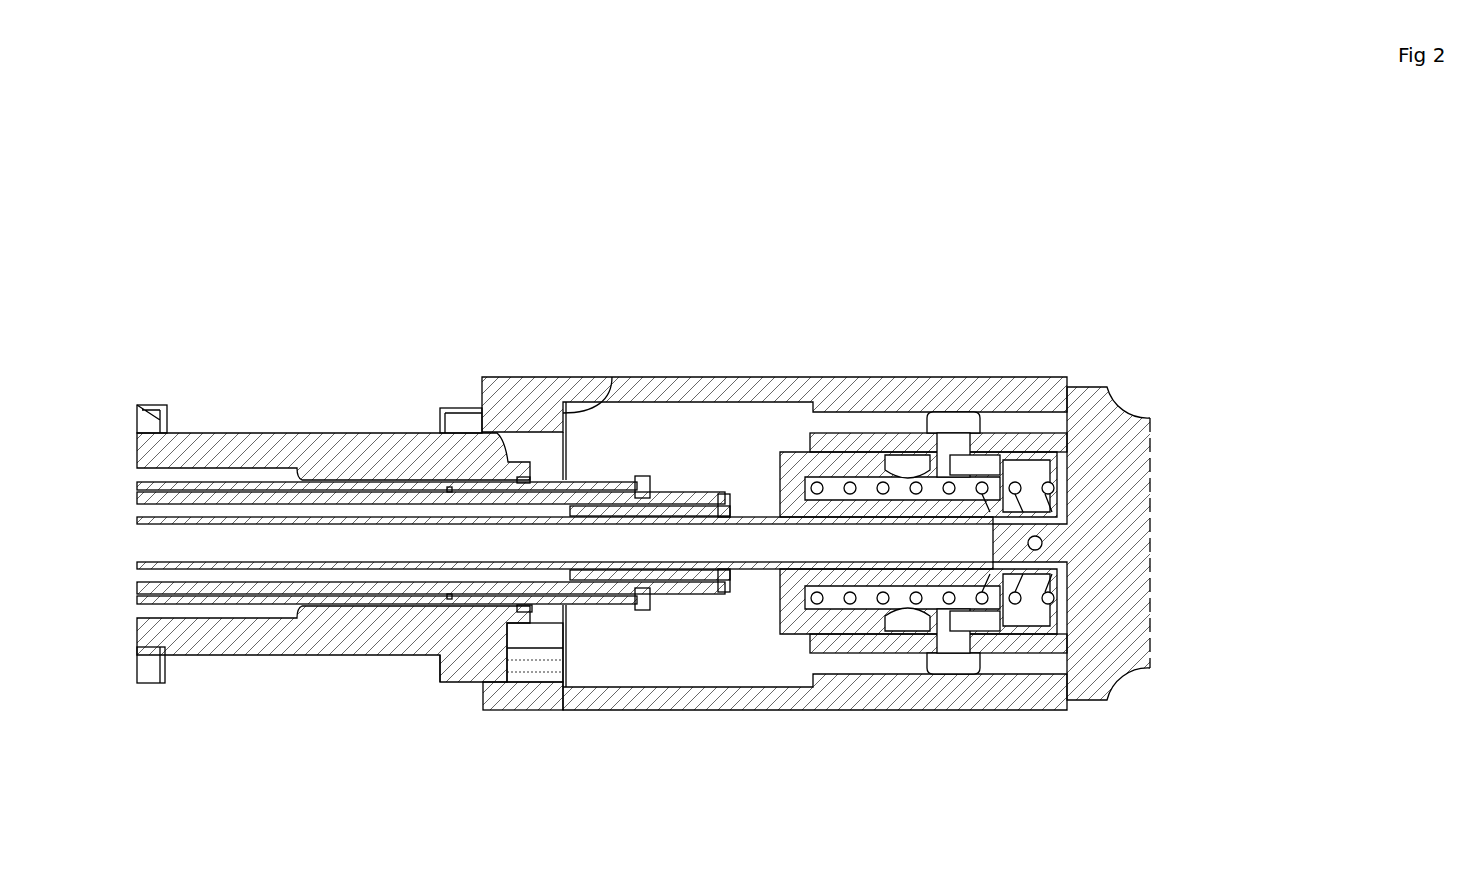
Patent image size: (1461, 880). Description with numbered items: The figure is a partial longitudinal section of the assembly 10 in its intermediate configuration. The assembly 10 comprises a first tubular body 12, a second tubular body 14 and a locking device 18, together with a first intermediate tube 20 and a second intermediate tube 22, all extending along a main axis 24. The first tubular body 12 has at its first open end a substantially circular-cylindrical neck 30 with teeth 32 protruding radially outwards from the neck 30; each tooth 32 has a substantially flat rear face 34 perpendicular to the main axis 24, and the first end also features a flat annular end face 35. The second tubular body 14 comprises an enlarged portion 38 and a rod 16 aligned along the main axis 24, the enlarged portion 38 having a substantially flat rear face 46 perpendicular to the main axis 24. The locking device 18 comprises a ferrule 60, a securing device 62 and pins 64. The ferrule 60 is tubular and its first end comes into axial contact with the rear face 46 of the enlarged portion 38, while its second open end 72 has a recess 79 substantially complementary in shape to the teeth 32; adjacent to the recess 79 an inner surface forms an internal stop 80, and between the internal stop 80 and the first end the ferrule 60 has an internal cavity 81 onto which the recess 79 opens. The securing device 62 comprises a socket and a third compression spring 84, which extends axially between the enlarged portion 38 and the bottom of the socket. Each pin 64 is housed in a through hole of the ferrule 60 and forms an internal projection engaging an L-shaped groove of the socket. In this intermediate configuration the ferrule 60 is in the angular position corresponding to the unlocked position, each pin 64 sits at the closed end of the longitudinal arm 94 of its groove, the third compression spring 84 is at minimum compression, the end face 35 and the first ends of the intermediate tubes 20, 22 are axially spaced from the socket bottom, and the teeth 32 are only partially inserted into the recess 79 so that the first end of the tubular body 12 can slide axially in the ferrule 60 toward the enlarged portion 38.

The assembly 10 is at (1227, 770).
The first tubular body 12 is at (141, 300).
The second tubular body 14 is at (1140, 750).
The rod 16 is at (265, 520).
The locking device 18 is at (949, 302).
The first intermediate tube 20 is at (222, 500).
The second intermediate tube 22 is at (185, 490).
The main axis 24 is at (1045, 543).
The neck 30 is at (337, 630).
The teeth 32 is at (467, 670).
The rear face 34 is at (440, 670).
The end face 35 is at (530, 620).
The enlarged portion 38 is at (1143, 375).
The rear face 46 is at (1065, 418).
The ferrule 60 is at (828, 725).
The securing device 62 is at (772, 637).
The pin 64 is at (961, 412).
The second open end 72 is at (500, 300).
The recess 79 is at (567, 662).
The internal stop 80 is at (611, 377).
The internal cavity 81 is at (666, 446).
The third compression spring 84 is at (1023, 615).
The longitudinal arm 94 is at (923, 475).